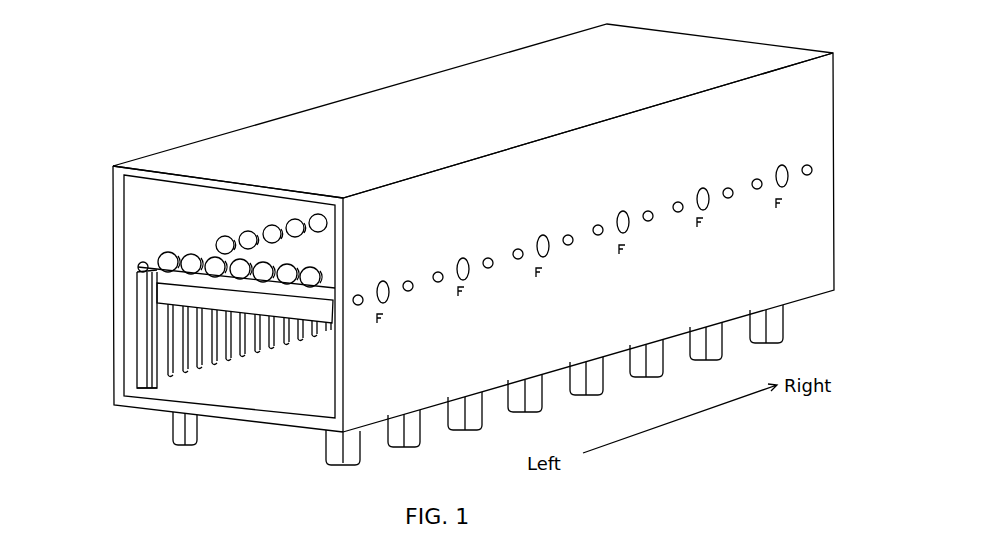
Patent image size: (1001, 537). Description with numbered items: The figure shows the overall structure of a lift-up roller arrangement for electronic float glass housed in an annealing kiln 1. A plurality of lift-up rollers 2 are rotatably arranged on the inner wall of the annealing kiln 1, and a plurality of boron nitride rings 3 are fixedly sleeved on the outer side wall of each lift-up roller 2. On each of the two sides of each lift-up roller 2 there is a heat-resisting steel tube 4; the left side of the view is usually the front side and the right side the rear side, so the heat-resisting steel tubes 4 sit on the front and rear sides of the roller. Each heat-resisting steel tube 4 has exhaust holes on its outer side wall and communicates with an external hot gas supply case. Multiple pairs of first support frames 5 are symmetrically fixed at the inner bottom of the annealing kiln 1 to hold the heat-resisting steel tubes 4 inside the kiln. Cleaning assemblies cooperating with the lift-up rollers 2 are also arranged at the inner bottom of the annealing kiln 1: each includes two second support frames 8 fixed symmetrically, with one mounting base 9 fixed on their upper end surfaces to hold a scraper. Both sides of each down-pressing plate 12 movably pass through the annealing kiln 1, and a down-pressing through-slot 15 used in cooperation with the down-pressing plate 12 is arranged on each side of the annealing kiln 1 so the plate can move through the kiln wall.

The annealing kiln 1 is at (432, 85).
The lift-up roller 2 is at (183, 250).
The boron nitride ring 3 is at (307, 263).
The heat-resisting steel tube 4 is at (152, 288).
The first support frame 5 is at (147, 342).
The second support frame 8 is at (165, 362).
The mounting base 9 is at (167, 303).
The down-pressing plate 12 is at (622, 242).
The down-pressing through-slot 15 is at (380, 322).